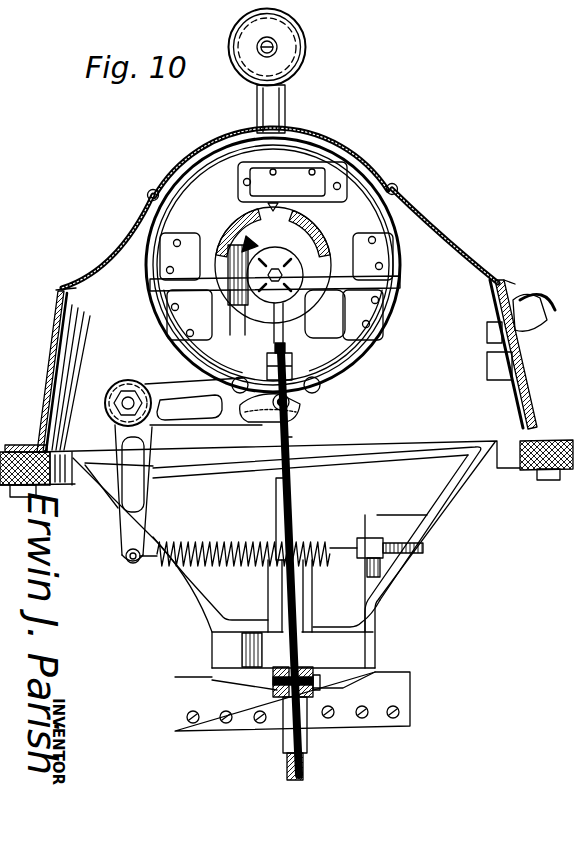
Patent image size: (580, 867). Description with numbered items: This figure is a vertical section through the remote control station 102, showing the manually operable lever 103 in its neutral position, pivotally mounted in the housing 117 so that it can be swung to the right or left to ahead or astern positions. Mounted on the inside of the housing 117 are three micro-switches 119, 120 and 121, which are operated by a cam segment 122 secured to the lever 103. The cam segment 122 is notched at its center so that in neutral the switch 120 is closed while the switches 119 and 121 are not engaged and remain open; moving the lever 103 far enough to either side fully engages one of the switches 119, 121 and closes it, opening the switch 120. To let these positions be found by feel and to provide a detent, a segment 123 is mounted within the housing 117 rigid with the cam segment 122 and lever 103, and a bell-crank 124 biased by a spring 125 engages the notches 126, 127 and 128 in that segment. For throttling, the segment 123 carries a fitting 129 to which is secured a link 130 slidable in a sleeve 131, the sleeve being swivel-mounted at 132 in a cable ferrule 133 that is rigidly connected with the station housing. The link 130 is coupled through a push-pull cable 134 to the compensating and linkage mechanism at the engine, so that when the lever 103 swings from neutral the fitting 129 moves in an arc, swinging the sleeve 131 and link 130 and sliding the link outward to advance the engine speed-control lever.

The control station 102 is at (424, 196).
The manually operable lever 103 is at (285, 110).
The housing 117 is at (451, 250).
The micro-switch 119 is at (372, 308).
The micro-switch 120 is at (320, 172).
The micro-switch 121 is at (183, 315).
The cam segment 122 is at (321, 226).
The segment 123 is at (350, 366).
The bell-crank 124 is at (125, 521).
The spring 125 is at (232, 545).
The notch 126 is at (242, 384).
The notch 127 is at (284, 395).
The notch 128 is at (318, 386).
The fitting 129 is at (291, 373).
The link 130 is at (292, 438).
The sleeve 131 is at (282, 493).
The swivel mounting 132 is at (315, 667).
The cable ferrule 133 is at (308, 752).
The push-pull cable 134 is at (305, 775).